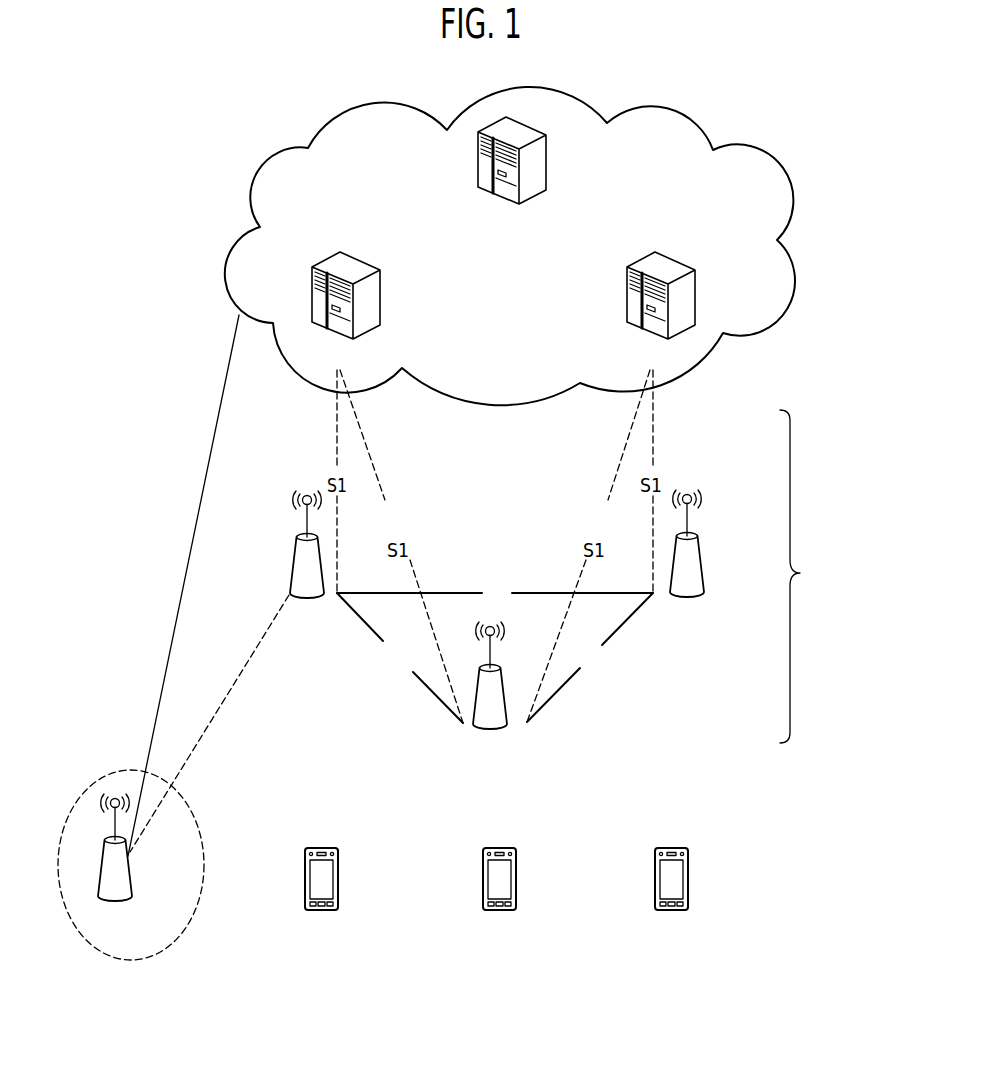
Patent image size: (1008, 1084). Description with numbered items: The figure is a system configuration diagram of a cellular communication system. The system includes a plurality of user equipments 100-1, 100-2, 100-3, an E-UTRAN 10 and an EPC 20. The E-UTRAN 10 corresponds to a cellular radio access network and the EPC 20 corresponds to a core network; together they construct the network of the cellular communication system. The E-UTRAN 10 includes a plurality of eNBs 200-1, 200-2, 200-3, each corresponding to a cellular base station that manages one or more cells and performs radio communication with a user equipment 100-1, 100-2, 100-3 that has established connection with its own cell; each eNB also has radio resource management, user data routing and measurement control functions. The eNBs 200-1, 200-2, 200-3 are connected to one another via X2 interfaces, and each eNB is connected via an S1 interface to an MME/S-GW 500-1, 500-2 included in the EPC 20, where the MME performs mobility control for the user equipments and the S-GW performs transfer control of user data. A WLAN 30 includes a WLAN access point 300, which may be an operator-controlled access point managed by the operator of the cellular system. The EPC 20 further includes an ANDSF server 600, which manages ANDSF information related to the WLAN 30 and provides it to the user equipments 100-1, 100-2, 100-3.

The E-UTRAN 10 is at (800, 573).
The EPC 20 is at (706, 128).
The WLAN 30 is at (143, 960).
The user equipment 100-1 is at (327, 848).
The user equipment 100-2 is at (504, 848).
The user equipment 100-3 is at (675, 848).
The eNB 200-1 is at (294, 567).
The eNB 200-2 is at (504, 706).
The eNB 200-3 is at (699, 548).
The WLAN access point 300 is at (130, 878).
The MME/S-GW 500-1 is at (364, 266).
The MME/S-GW 500-2 is at (672, 263).
The ANDSF server 600 is at (550, 170).